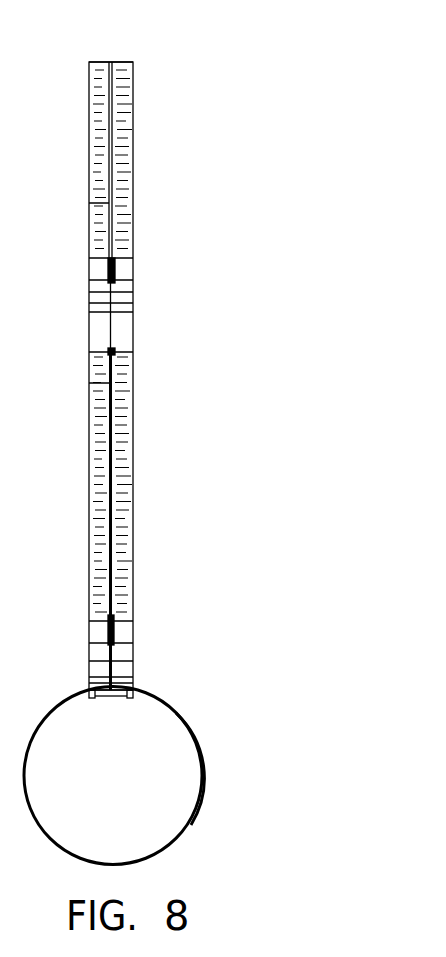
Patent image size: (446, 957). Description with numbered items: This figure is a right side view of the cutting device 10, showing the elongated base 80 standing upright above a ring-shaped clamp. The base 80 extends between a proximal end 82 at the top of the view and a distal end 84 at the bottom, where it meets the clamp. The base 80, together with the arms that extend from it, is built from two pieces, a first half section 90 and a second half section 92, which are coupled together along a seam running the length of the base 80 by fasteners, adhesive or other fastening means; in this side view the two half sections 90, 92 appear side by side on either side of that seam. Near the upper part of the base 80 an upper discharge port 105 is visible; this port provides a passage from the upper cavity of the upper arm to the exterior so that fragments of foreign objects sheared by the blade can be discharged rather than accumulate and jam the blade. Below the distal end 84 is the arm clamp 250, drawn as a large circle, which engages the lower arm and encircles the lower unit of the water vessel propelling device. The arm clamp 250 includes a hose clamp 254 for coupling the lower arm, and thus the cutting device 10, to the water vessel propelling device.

The cutting device 10 is at (133, 90).
The base 80 is at (133, 134).
The proximal end 82 is at (112, 62).
The distal end 84 is at (118, 695).
The first half section 90 is at (90, 421).
The second half section 92 is at (133, 398).
The upper discharge port 105 is at (114, 266).
The arm clamp 250 is at (202, 751).
The hose clamp 254 is at (193, 812).